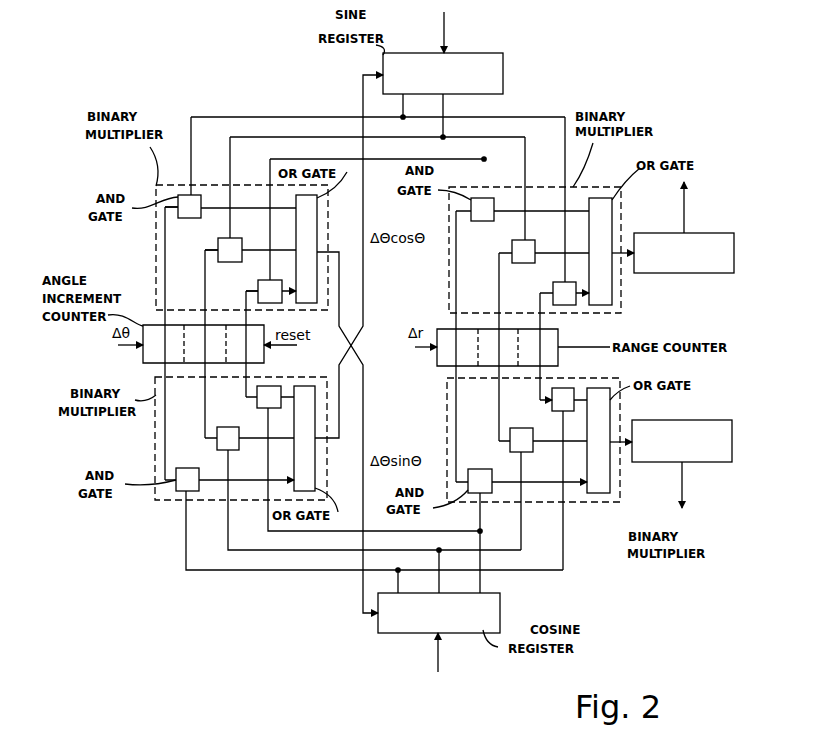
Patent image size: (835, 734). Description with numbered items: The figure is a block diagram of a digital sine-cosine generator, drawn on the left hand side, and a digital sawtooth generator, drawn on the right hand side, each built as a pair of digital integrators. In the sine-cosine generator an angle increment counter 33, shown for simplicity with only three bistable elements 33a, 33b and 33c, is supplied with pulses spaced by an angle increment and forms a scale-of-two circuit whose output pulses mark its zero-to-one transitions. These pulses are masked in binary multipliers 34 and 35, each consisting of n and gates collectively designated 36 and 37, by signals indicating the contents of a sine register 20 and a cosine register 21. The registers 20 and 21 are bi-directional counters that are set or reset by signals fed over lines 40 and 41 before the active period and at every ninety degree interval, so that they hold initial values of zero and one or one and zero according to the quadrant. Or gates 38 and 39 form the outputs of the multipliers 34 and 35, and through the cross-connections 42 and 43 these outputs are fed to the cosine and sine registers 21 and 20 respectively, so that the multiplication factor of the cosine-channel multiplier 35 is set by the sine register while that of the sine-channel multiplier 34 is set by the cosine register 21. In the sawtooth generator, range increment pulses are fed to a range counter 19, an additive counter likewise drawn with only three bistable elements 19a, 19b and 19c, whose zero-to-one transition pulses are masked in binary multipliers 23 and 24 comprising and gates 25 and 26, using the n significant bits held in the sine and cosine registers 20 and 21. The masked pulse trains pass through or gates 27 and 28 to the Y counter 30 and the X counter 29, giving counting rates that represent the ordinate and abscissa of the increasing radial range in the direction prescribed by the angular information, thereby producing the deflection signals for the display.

The range counter 19 is at (512, 354).
The bistable element 19a is at (457, 347).
The bistable element 19b is at (498, 347).
The bistable element 19c is at (557, 366).
The sine register 20 is at (507, 58).
The cosine register 21 is at (498, 628).
The binary multiplier 23 is at (603, 191).
The binary multiplier 24 is at (625, 535).
The and gates 25 is at (560, 292).
The and gates 26 is at (558, 403).
The or gate 27 is at (608, 220).
The or gate 28 is at (604, 468).
The X counter 29 is at (716, 468).
The Y counter 30 is at (720, 237).
The angle increment counter 33 is at (194, 349).
The bistable element 33a is at (163, 344).
The bistable element 33b is at (205, 344).
The bistable element 33c is at (245, 344).
The binary multiplier 34 is at (157, 191).
The binary multiplier 35 is at (164, 495).
The and gates 36 is at (266, 289).
The and gates 37 is at (264, 400).
The or gate 38 is at (311, 218).
The or gate 39 is at (308, 457).
The line 40 is at (451, 31).
The line 41 is at (446, 656).
The cross-connection 42 is at (353, 256).
The cross-connection 43 is at (354, 432).